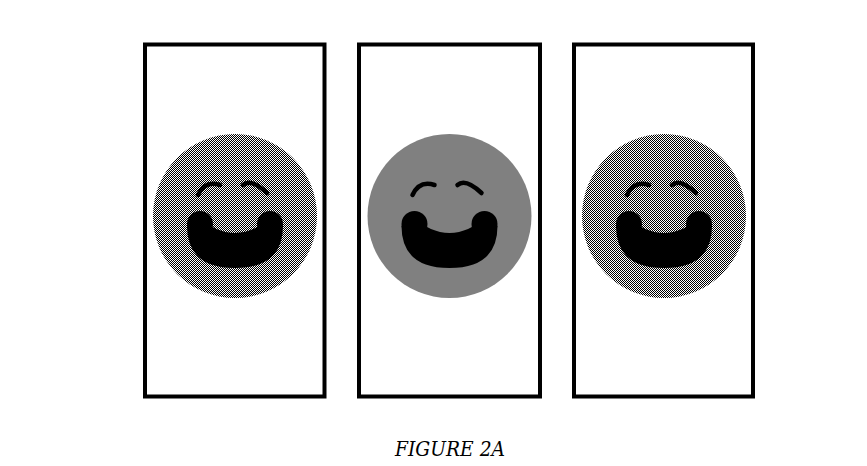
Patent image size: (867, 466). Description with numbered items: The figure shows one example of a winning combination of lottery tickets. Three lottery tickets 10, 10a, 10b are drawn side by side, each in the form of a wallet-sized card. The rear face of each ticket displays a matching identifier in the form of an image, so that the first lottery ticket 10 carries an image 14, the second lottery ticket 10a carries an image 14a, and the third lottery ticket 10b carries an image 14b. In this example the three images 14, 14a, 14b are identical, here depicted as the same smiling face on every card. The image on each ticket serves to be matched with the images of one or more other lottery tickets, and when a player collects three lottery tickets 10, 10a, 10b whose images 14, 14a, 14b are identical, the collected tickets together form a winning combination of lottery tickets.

The lottery ticket 10 is at (130, 100).
The lottery ticket 10a is at (346, 59).
The lottery ticket 10b is at (769, 79).
The image 14 is at (180, 212).
The image 14a is at (482, 167).
The image 14b is at (725, 200).